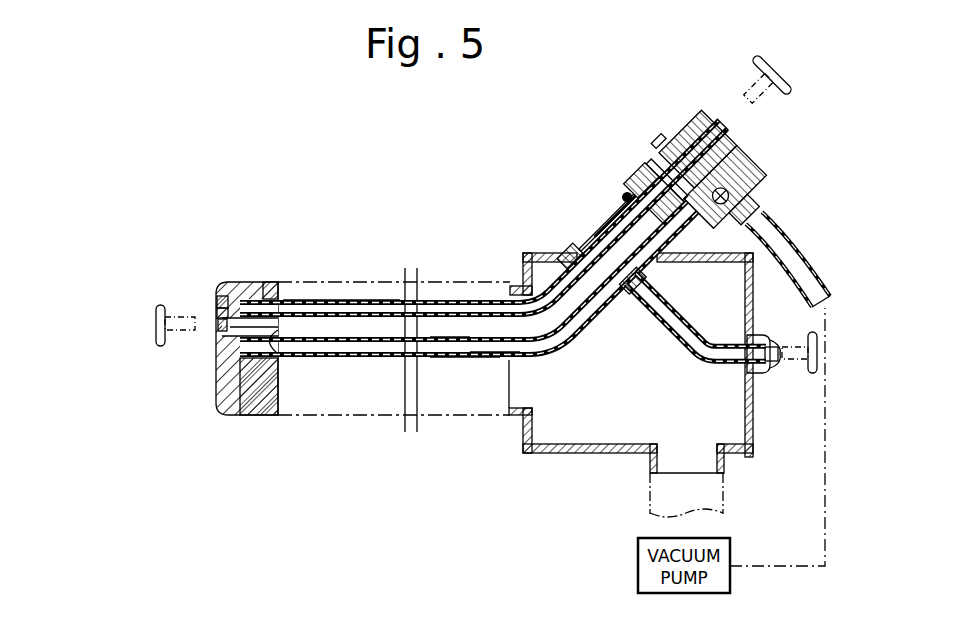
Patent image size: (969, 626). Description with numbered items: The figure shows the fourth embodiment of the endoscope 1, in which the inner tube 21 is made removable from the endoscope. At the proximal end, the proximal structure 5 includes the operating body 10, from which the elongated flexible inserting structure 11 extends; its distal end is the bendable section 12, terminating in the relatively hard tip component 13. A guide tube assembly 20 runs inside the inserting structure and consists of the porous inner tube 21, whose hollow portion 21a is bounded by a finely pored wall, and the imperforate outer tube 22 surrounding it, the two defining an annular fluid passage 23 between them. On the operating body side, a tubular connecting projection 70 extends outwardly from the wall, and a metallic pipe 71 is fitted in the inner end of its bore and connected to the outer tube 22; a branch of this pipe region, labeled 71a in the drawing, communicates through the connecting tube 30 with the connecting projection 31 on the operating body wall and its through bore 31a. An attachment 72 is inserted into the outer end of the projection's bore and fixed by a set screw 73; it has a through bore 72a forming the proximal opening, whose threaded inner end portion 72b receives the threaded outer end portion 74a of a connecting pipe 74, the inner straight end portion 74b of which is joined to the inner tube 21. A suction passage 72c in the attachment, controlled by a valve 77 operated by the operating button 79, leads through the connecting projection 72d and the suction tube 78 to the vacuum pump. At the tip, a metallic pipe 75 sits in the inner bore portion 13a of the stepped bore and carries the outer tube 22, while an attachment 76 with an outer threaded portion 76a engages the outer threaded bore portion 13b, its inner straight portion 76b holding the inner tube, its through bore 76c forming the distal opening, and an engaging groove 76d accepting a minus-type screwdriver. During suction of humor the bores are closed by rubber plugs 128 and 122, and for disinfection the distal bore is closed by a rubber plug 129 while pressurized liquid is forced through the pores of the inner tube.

The endoscope 1 is at (463, 433).
The proximal structure 5 is at (735, 465).
The operating body 10 is at (752, 410).
The inserting structure 11 is at (463, 280).
The bendable section 12 is at (386, 281).
The tip component 13 is at (243, 281).
The inner bore portion 13a is at (266, 282).
The outer threaded bore portion 13b is at (220, 298).
The guide tube assembly 20 is at (427, 297).
The inner tube 21 is at (347, 342).
The hollow portion 21a is at (467, 338).
The outer tube 22 is at (433, 360).
The annular fluid passage 23 is at (478, 357).
The connecting tube 30 is at (670, 323).
The connecting projection 31 is at (760, 334).
The through bore 31a is at (773, 367).
The tubular connecting projection 70 is at (594, 243).
The metallic pipe 71 is at (562, 261).
The branch fitting 71a is at (636, 285).
The attachment 72 is at (700, 120).
The through bore 72a is at (718, 128).
The threaded inner end portion 72b is at (703, 224).
The suction passage 72c is at (730, 150).
The connecting projection 72d is at (746, 215).
The set screw 73 is at (625, 196).
The connecting pipe 74 is at (655, 176).
The threaded outer end portion 74a is at (639, 189).
The inner straight end portion 74b is at (602, 229).
The metallic pipe 75 is at (287, 301).
The attachment 76 is at (278, 350).
The outer threaded portion 76a is at (250, 330).
The inner straight portion 76b is at (239, 398).
The through bore 76c is at (220, 312).
The engaging groove 76d is at (222, 328).
The valve 77 is at (728, 192).
The suction tube 78 is at (793, 249).
The operating button 79 is at (658, 134).
The rubber plug 122 is at (813, 375).
The rubber plug 128 is at (784, 57).
The rubber plug 129 is at (161, 349).